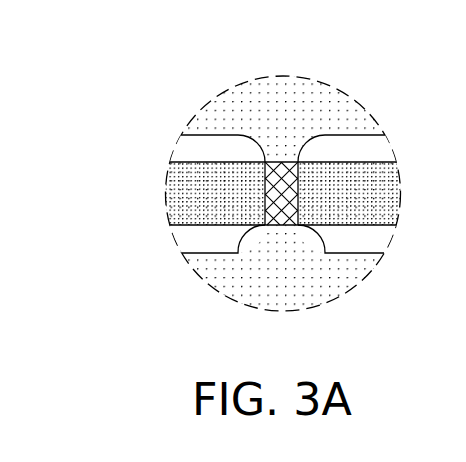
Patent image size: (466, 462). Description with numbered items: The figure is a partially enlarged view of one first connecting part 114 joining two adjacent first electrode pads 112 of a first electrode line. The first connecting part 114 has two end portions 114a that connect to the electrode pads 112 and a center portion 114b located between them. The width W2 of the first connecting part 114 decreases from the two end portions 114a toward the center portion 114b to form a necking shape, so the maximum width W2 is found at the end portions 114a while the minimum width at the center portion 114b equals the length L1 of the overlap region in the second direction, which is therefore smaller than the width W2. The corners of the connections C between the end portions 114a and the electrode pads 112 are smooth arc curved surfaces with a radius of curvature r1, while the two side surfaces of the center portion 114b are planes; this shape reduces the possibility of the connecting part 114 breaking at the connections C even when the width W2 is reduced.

The first electrode pad 112 is at (343, 115).
The first connecting part 114 is at (213, 189).
The end portion 114a is at (263, 147).
The center portion 114b is at (275, 186).
The width W2 is at (327, 135).
The length L1 is at (298, 162).
The radius of curvature r1 is at (313, 150).
The connection C is at (335, 232).